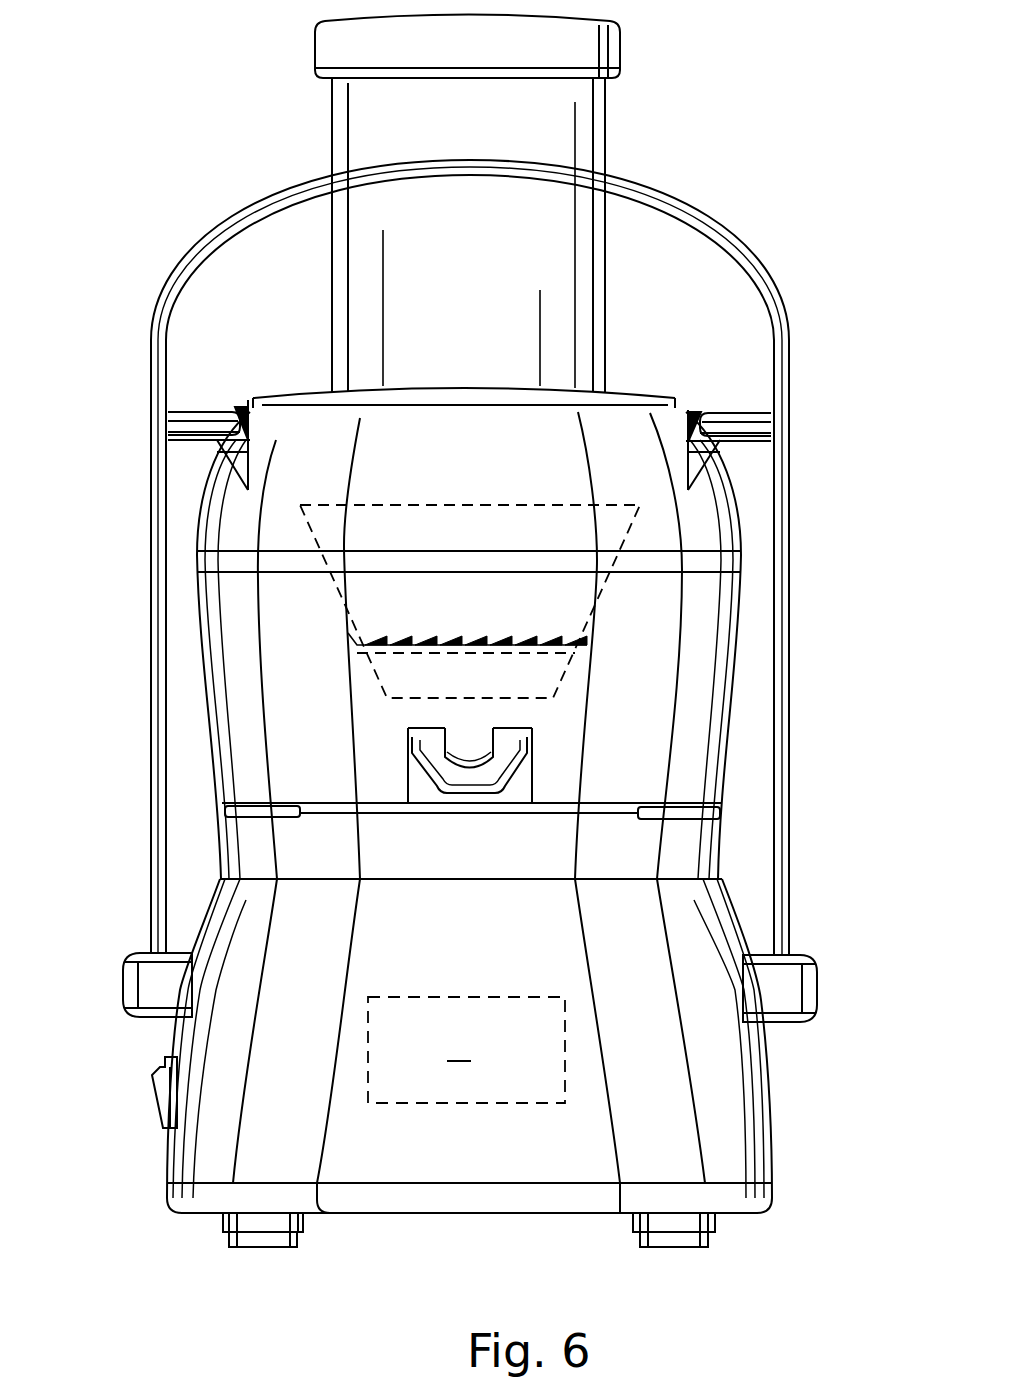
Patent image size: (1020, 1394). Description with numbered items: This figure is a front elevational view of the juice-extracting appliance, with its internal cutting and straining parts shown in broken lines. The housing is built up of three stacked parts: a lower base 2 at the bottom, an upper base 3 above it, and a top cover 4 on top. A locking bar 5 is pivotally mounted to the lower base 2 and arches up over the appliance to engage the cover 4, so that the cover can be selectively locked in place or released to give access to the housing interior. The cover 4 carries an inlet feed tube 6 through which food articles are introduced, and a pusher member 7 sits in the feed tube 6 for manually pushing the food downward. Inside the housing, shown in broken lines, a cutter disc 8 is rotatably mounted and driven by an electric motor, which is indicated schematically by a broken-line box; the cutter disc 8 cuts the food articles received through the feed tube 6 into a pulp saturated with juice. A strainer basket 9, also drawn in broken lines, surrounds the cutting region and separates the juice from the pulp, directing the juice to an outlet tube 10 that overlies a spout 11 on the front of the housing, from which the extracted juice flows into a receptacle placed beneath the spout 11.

The lower base 2 is at (244, 1061).
The upper base 3 is at (245, 628).
The top cover 4 is at (197, 528).
The locking bar 5 is at (792, 266).
The inlet feed tube 6 is at (607, 278).
The pusher member 7 is at (621, 49).
The cutter disc 8 is at (421, 645).
The strainer basket 9 is at (600, 584).
The outlet tube 10 is at (474, 737).
The spout 11 is at (530, 770).